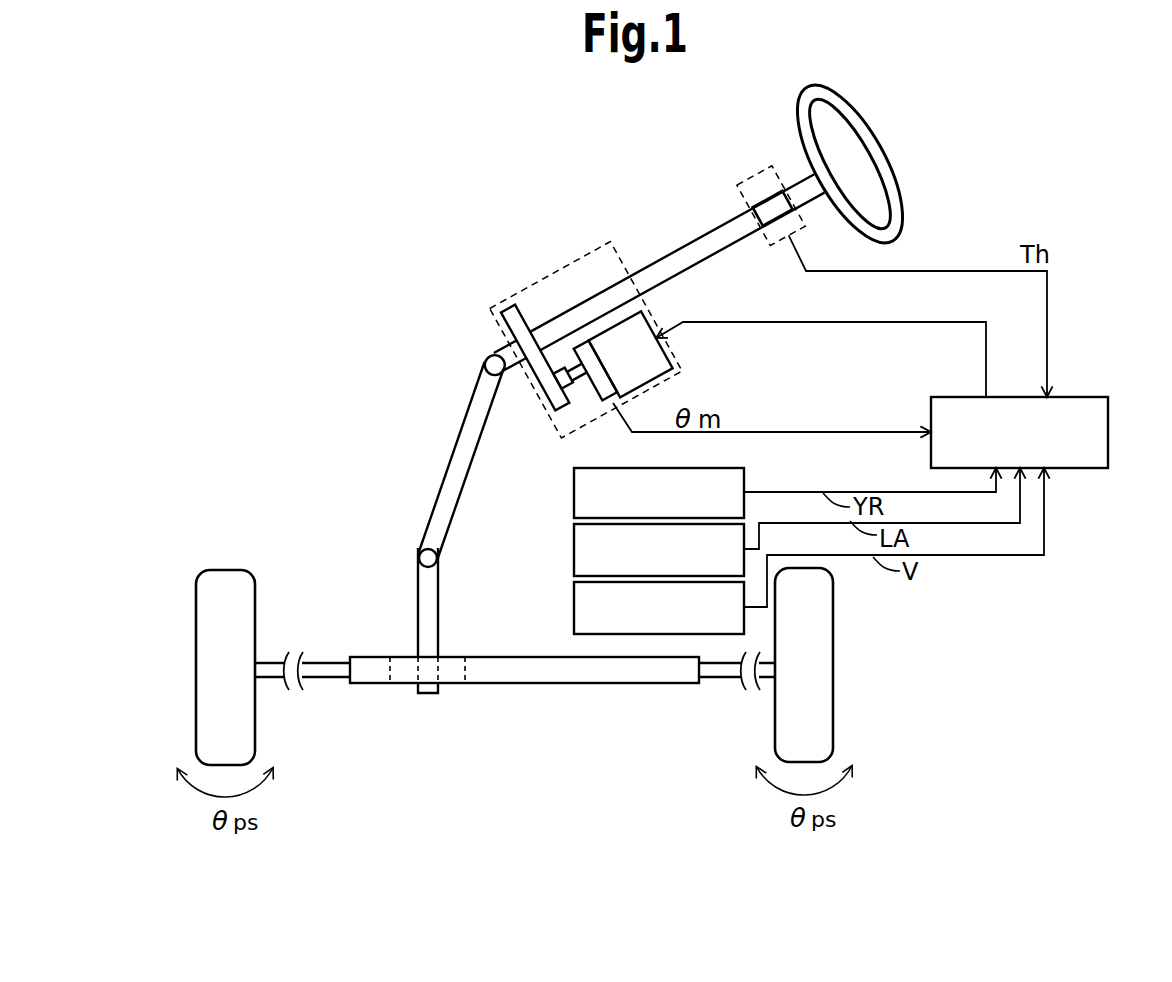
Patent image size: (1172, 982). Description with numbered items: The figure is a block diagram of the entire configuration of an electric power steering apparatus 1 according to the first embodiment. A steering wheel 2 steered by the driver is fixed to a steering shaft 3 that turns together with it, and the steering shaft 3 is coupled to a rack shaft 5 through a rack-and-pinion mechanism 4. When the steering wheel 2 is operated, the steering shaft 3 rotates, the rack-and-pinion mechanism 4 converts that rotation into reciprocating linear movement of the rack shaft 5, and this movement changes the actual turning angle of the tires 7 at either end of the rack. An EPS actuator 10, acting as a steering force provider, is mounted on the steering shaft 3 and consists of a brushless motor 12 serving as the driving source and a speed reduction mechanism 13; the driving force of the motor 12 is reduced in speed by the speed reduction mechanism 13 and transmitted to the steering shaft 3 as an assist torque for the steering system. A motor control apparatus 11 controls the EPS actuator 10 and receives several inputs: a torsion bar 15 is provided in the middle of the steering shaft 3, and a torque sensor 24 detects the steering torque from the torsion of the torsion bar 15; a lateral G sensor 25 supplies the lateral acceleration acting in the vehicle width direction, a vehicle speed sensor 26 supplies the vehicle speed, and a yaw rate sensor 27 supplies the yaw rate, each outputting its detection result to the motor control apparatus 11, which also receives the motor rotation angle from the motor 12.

The electric power steering apparatus 1 is at (1090, 128).
The steering wheel 2 is at (877, 145).
The steering shaft 3 is at (473, 463).
The rack-and-pinion mechanism 4 is at (453, 655).
The rack shaft 5 is at (498, 653).
The tires 7 is at (227, 567).
The EPS actuator 10 is at (552, 274).
The motor control apparatus 11 is at (1109, 432).
The motor 12 is at (623, 358).
The speed reduction mechanism 13 is at (541, 410).
The torsion bar 15 is at (767, 205).
The torque sensor 24 is at (737, 183).
The lateral G sensor 25 is at (573, 550).
The vehicle speed sensor 26 is at (573, 608).
The yaw rate sensor 27 is at (573, 493).